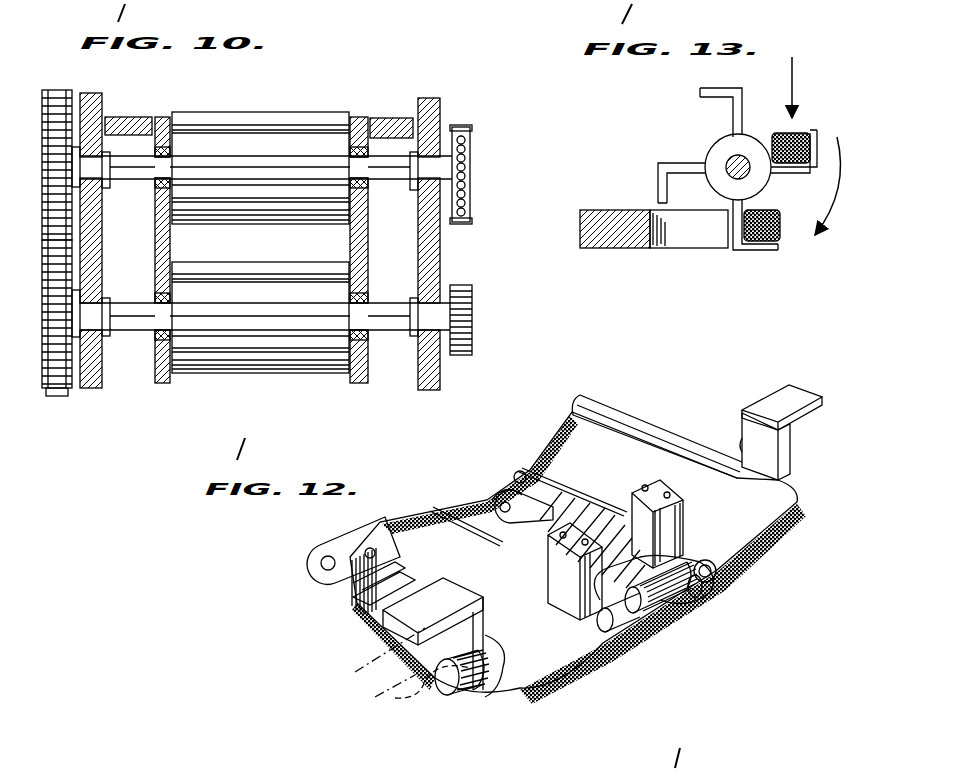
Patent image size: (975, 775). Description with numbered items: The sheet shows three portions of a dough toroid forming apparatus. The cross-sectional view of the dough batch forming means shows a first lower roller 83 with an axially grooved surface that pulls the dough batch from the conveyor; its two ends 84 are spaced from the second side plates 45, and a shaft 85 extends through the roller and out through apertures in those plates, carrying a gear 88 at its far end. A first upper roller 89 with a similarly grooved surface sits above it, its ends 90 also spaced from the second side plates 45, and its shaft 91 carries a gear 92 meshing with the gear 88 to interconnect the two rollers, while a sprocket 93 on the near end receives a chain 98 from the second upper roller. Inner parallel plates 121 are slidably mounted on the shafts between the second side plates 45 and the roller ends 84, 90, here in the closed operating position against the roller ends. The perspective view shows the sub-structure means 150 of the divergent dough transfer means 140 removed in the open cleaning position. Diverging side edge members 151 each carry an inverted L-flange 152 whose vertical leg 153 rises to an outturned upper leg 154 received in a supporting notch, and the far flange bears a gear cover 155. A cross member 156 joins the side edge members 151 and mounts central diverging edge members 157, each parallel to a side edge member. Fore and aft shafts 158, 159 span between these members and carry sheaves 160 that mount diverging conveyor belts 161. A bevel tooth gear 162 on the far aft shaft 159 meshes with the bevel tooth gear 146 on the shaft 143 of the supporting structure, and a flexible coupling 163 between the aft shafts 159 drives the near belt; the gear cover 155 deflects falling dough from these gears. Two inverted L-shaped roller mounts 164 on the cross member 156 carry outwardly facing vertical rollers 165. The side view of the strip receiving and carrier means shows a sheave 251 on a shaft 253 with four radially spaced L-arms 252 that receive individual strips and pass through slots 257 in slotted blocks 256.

In FIG. 10, the second side plates 45 is at (90, 103).
In FIG. 10, the first lower roller 83 is at (265, 350).
In FIG. 10, the roller ends 84 is at (168, 265).
In FIG. 10, the shaft 85 is at (380, 322).
In FIG. 10, the gear 88 is at (55, 385).
In FIG. 10, the first upper roller 89 is at (255, 195).
In FIG. 10, the roller ends 90 is at (160, 122).
In FIG. 10, the shaft 91 is at (385, 172).
In FIG. 10, the gear 92 is at (58, 90).
In FIG. 10, the sprocket 93 is at (470, 168).
In FIG. 10, the chain 98 is at (470, 212).
In FIG. 10, the inner parallel plates 121 is at (155, 245).
In FIG. 12, the divergent dough transfer means 140 is at (605, 388).
In FIG. 12, the shaft 143 is at (376, 660).
In FIG. 12, the bevel tooth gear 146 is at (410, 690).
In FIG. 12, the sub-structure means 150 is at (688, 656).
In FIG. 12, the side edge members 151 is at (620, 413).
In FIG. 12, the inverted L-flange 152 is at (795, 448).
In FIG. 12, the vertical leg 153 is at (745, 440).
In FIG. 12, the upper leg 154 is at (800, 393).
In FIG. 12, the gear cover 155 is at (420, 583).
In FIG. 12, the cross member 156 is at (512, 507).
In FIG. 12, the central diverging edge members 157 is at (497, 493).
In FIG. 12, the fore shafts 158 is at (318, 566).
In FIG. 12, the aft shafts 159 is at (608, 632).
In FIG. 12, the sheaves 160 is at (524, 470).
In FIG. 12, the diverging conveyor belts 161 is at (531, 497).
In FIG. 12, the bevel tooth gear 162 is at (468, 700).
In FIG. 12, the flexible coupling 163 is at (660, 610).
In FIG. 12, the roller mounts 164 is at (638, 510).
In FIG. 12, the vertical rollers 165 is at (686, 512).
In FIG. 13, the sheave 251 is at (725, 147).
In FIG. 13, the L-arms 252 is at (705, 90).
In FIG. 13, the shaft 253 is at (733, 174).
In FIG. 13, the slotted blocks 256 is at (596, 250).
In FIG. 13, the slots 257 is at (672, 250).